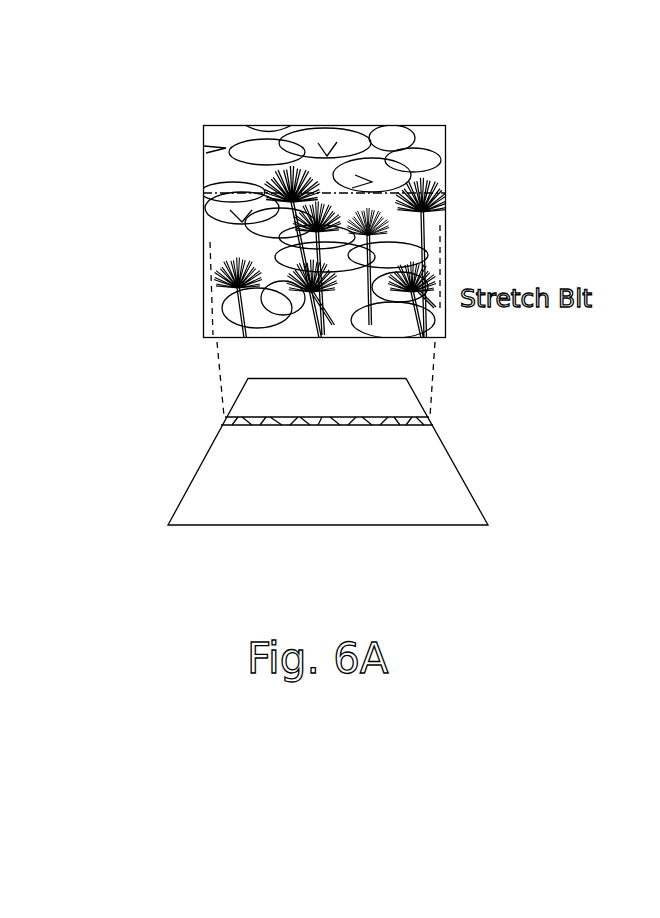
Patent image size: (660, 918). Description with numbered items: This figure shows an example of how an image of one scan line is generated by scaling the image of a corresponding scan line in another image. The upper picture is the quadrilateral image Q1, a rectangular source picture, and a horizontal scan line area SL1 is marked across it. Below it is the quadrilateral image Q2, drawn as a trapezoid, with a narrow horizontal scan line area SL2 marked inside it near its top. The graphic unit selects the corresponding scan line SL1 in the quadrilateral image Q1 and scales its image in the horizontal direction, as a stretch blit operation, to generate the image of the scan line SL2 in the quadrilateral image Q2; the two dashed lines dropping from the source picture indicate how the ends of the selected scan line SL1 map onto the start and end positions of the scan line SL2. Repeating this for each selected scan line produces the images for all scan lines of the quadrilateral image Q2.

The quadrilateral image Q1 is at (533, 238).
The scan line area SL1 is at (446, 193).
The quadrilateral image Q2 is at (497, 479).
The scan line area SL2 is at (431, 418).